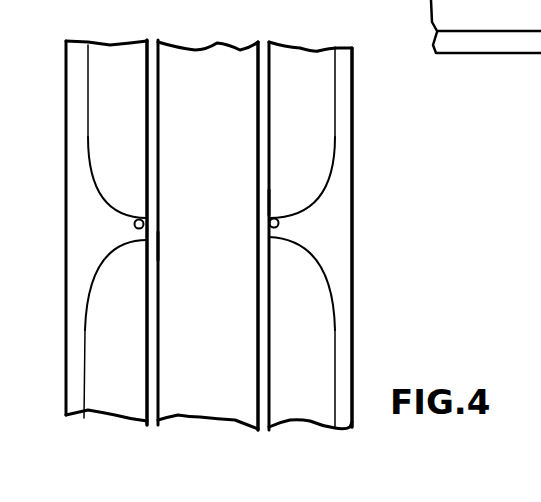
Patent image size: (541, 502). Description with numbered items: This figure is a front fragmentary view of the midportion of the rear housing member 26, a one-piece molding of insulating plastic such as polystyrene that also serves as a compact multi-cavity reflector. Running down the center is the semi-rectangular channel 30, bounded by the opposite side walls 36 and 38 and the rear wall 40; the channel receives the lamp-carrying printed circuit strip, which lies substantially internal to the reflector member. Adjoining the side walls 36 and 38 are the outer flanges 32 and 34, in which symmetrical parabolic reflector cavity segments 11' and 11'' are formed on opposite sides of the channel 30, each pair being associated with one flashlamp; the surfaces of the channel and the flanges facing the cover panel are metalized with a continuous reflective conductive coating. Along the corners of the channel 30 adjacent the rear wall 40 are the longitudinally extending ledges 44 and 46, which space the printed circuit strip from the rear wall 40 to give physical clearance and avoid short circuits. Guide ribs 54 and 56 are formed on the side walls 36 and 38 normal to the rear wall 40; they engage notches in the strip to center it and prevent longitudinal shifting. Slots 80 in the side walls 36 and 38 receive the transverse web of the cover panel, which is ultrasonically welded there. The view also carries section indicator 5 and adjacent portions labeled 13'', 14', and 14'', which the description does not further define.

The section line 5- 5 is at (60, 292).
The parabolic reflector cavity segment 11' is at (93, 152).
The parabolic reflector cavity segment 11'' is at (338, 167).
The adjacent panel member 13'' is at (486, 41).
The lower lobe portion of first panel 14' is at (92, 304).
The lower lobe portion of second panel 14'' is at (337, 295).
The rear housing member 26 is at (351, 370).
The channel 30 is at (234, 396).
The outer flange 32 is at (65, 188).
The outer flange 34 is at (352, 206).
The side wall 36 is at (153, 335).
The side wall 38 is at (268, 289).
The rear wall 40 is at (213, 50).
The ledge 44 is at (153, 403).
The ledge 46 is at (262, 356).
The guide rib 54 is at (152, 244).
The guide rib 56 is at (268, 203).
The slot 80 is at (133, 226).